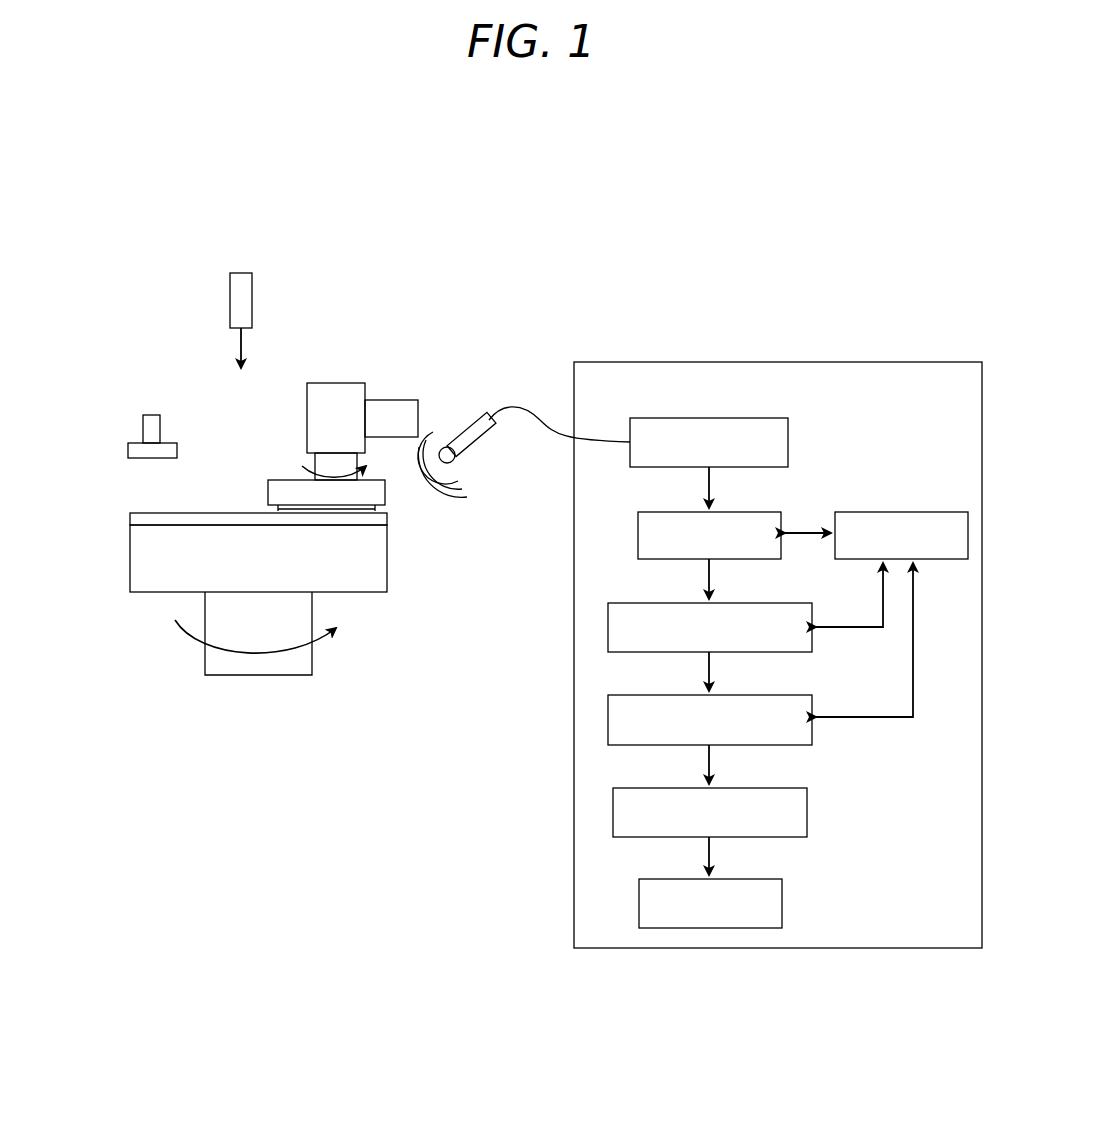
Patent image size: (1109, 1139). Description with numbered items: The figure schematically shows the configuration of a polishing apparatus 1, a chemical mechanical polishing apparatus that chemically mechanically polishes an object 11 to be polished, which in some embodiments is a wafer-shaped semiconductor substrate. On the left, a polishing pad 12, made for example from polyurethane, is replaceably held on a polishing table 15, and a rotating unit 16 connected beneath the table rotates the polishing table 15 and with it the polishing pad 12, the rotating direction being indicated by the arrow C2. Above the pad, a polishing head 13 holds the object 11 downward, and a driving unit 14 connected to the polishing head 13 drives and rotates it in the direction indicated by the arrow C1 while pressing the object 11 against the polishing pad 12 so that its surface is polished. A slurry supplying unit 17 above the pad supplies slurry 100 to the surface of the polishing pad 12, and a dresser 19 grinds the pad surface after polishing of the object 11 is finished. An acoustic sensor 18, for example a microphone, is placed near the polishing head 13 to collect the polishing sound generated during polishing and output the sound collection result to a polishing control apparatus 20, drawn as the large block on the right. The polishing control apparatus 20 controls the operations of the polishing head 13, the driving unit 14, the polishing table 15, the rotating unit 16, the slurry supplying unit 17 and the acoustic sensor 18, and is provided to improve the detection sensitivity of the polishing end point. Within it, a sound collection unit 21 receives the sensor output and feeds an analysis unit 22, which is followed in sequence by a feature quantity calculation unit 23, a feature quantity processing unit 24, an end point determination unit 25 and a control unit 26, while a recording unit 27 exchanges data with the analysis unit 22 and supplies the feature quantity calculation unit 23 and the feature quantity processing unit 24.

The polishing apparatus 1 is at (538, 192).
The object to be polished 11 is at (278, 509).
The polishing pad 12 is at (160, 513).
The polishing head 13 is at (268, 495).
The driving unit 14 is at (307, 405).
The polishing table 15 is at (130, 550).
The rotating unit 16 is at (205, 605).
The slurry supplying unit 17 is at (231, 298).
The acoustic sensor 18 is at (463, 420).
The dresser 19 is at (143, 430).
The polishing control apparatus 20 is at (908, 362).
The sound collection unit 21 is at (665, 418).
The analysis unit 22 is at (670, 512).
The feature quantity calculation unit 23 is at (670, 603).
The feature quantity processing unit 24 is at (670, 695).
The end point determination unit 25 is at (670, 788).
The control unit 26 is at (670, 879).
The recording unit 27 is at (880, 512).
The slurry 100 is at (240, 352).
The arrow indicating rotating direction of the object or polishing head C1 is at (314, 465).
The arrow indicating rotating direction of the polishing pad and polishing table C2 is at (278, 631).